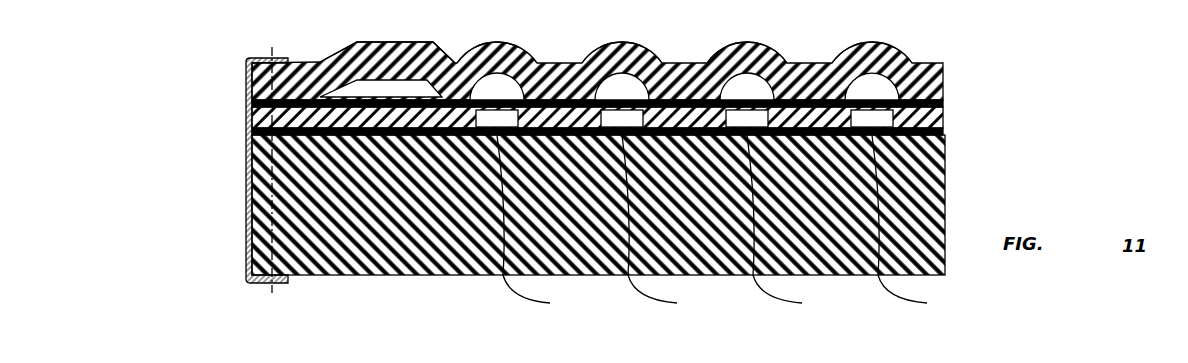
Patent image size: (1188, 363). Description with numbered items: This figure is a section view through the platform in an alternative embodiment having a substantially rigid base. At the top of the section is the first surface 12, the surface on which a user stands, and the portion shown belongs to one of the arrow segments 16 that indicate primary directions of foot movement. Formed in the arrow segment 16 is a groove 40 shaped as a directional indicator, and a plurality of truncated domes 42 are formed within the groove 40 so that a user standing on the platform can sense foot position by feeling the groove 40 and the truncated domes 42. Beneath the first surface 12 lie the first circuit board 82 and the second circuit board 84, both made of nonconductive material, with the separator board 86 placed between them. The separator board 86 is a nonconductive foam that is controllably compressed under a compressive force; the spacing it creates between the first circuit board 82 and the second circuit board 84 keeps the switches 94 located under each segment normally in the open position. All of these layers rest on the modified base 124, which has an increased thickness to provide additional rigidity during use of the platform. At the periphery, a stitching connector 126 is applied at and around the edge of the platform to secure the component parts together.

The first surface 12 is at (250, 72).
The arrow segments 16 is at (360, 42).
The groove 40 is at (453, 56).
The truncated domes 42 is at (494, 42).
The first circuit board 82 is at (250, 100).
The second circuit board 84 is at (250, 133).
The separator board 86 is at (250, 118).
The switches 94 is at (725, 224).
The modified base 124 is at (262, 163).
The stitching connector 126 is at (270, 60).